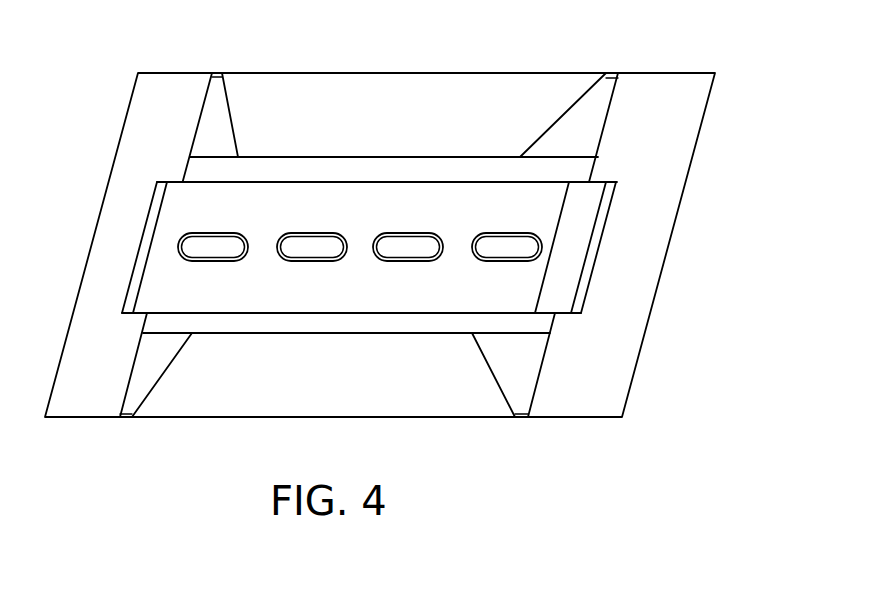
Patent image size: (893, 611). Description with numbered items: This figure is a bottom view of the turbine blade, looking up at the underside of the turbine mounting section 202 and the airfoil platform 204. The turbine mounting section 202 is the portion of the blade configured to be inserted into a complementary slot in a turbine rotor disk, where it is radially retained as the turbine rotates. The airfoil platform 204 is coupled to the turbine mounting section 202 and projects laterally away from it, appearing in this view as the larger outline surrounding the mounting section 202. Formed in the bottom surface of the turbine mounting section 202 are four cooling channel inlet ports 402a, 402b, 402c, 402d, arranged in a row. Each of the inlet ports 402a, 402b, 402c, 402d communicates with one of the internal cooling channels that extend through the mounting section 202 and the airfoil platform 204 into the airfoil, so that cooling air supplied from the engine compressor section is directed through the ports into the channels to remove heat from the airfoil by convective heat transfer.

The airfoil platform 204 is at (697, 122).
The turbine mounting section 202 is at (328, 326).
The cooling channel inlet port 402a is at (211, 241).
The cooling channel inlet port 402b is at (309, 241).
The cooling channel inlet port 402c is at (406, 241).
The cooling channel inlet port 402d is at (504, 241).